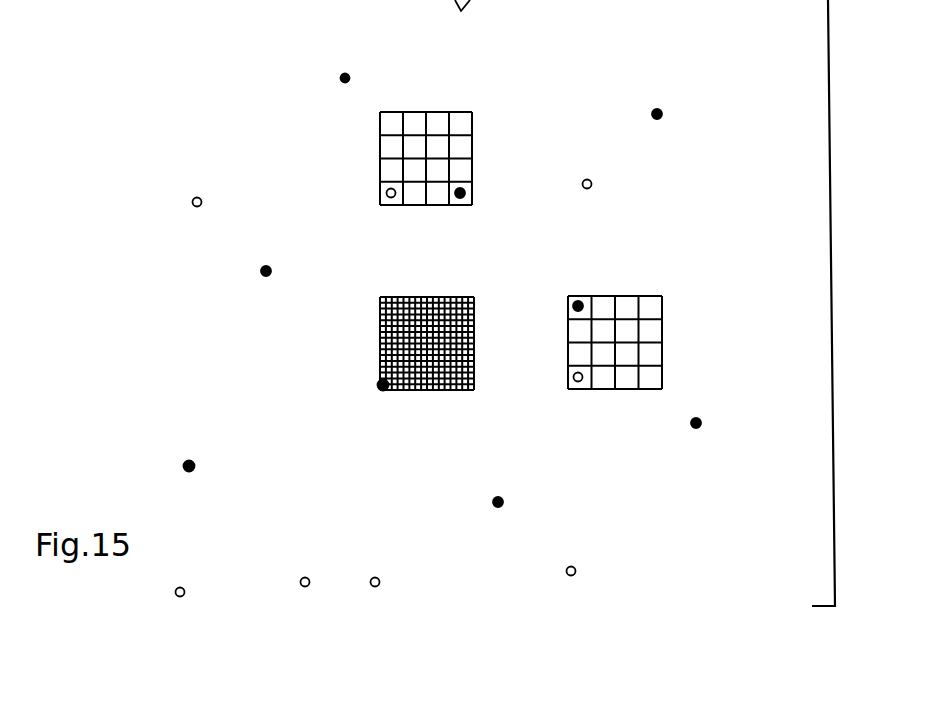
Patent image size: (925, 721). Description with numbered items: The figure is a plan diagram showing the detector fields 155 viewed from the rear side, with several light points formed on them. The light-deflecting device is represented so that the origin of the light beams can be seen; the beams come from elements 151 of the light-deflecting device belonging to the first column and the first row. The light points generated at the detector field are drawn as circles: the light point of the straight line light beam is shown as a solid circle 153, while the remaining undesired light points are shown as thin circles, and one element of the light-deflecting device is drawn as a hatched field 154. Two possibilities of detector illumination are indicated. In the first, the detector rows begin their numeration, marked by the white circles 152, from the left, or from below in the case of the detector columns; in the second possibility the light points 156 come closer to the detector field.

The elements of the light-deflecting device 151 is at (383, 385).
The white circles 152 is at (578, 377).
The filled circle markers on grid squares 153 is at (578, 306).
The hatched square 154 is at (405, 300).
The detector fields 155 is at (627, 298).
The light points 156 is at (345, 78).